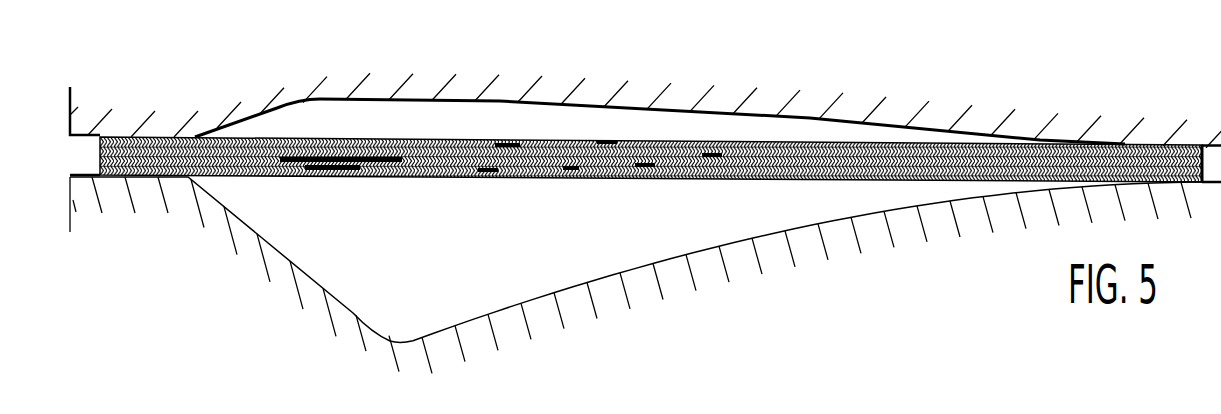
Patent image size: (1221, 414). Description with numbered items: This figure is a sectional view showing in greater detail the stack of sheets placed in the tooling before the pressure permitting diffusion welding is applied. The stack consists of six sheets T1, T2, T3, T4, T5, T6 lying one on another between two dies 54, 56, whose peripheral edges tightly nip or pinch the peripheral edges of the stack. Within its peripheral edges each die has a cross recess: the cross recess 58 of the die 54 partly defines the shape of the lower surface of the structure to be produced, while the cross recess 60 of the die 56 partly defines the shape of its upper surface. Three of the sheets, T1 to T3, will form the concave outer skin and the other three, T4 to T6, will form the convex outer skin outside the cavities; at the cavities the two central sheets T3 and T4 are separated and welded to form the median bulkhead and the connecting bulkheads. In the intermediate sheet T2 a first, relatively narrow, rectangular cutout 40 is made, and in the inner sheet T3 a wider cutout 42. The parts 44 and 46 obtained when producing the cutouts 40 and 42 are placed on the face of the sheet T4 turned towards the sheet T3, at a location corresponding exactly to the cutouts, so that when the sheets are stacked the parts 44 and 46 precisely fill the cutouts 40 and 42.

The first cutout 40 is at (320, 175).
The wider cutout 42 is at (395, 175).
The part 44 is at (348, 175).
The part 46 is at (303, 157).
The die 54 is at (166, 252).
The die 56 is at (170, 99).
The cross recess 58 is at (624, 272).
The cross recess 60 is at (735, 113).
The sheet T1 is at (490, 175).
The intermediate sheet T2 is at (563, 170).
The inner sheet T3 is at (645, 170).
The sheet T4 is at (722, 160).
The sheet T5 is at (495, 143).
The sheet T6 is at (600, 142).